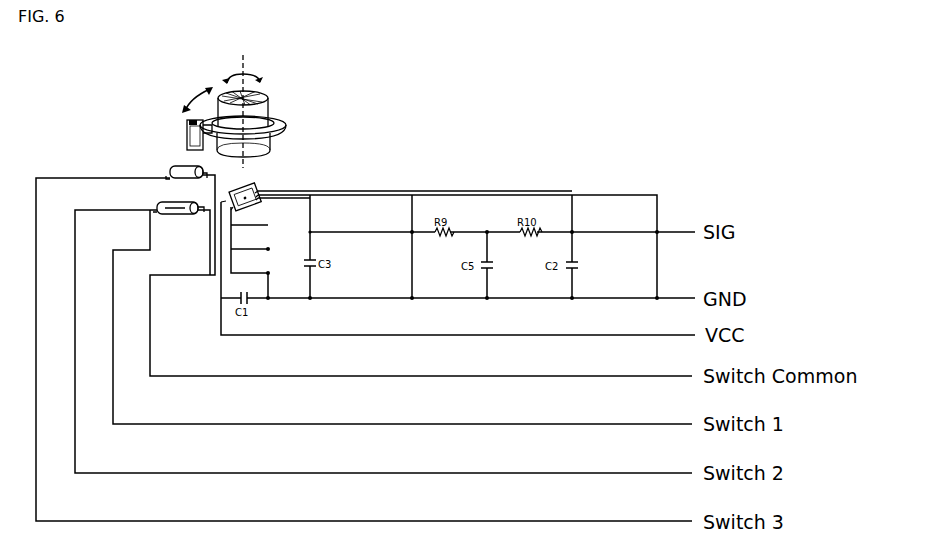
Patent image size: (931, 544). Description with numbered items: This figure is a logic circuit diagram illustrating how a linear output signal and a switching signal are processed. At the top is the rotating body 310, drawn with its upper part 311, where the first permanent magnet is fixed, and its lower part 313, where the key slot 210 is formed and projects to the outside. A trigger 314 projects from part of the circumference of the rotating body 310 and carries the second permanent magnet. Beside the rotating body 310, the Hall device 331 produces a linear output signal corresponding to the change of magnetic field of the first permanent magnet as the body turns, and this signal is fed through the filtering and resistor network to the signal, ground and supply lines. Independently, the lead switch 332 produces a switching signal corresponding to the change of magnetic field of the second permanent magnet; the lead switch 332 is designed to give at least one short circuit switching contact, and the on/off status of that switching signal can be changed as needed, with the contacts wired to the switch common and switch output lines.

The key slot 210 is at (262, 87).
The rotating body 310 is at (275, 114).
The upper part 311 is at (270, 102).
The lower part 313 is at (287, 147).
The trigger 314 is at (183, 128).
The Hall device 331 is at (260, 190).
The lead switch 332 is at (157, 203).